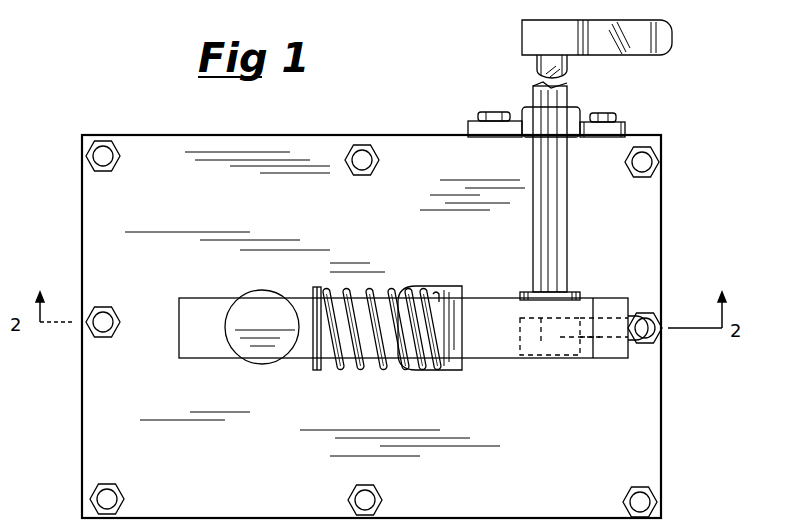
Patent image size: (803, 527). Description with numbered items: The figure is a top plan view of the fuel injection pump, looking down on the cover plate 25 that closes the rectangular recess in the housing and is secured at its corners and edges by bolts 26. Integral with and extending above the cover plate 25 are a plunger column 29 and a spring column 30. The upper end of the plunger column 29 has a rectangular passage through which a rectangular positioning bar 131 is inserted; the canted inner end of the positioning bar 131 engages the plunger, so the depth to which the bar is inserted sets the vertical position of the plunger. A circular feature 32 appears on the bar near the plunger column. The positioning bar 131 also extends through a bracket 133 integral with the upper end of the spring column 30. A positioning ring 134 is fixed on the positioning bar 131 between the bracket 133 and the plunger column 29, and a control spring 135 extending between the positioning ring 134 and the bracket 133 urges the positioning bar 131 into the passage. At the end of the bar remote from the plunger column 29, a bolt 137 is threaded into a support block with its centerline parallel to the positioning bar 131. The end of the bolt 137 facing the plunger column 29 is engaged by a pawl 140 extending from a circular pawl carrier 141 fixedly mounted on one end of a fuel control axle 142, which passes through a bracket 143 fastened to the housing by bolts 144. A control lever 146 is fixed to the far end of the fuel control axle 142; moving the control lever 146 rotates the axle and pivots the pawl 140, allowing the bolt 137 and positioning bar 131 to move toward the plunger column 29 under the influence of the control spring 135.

The cover plate 25 is at (408, 244).
The bolts 26 is at (120, 156).
The plunger column 29 is at (254, 364).
The spring column 30 is at (432, 372).
The circular recess 32 is at (272, 323).
The positioning bar 131 is at (210, 331).
The bracket 133 is at (460, 372).
The positioning ring 134 is at (322, 372).
The control spring 135 is at (384, 372).
The bolt 137 is at (640, 340).
The pawl 140 is at (549, 368).
The pawl carrier 141 is at (575, 291).
The fuel control axle 142 is at (567, 242).
The bracket 143 is at (560, 133).
The bolts 144 is at (486, 111).
The control lever 146 is at (560, 52).